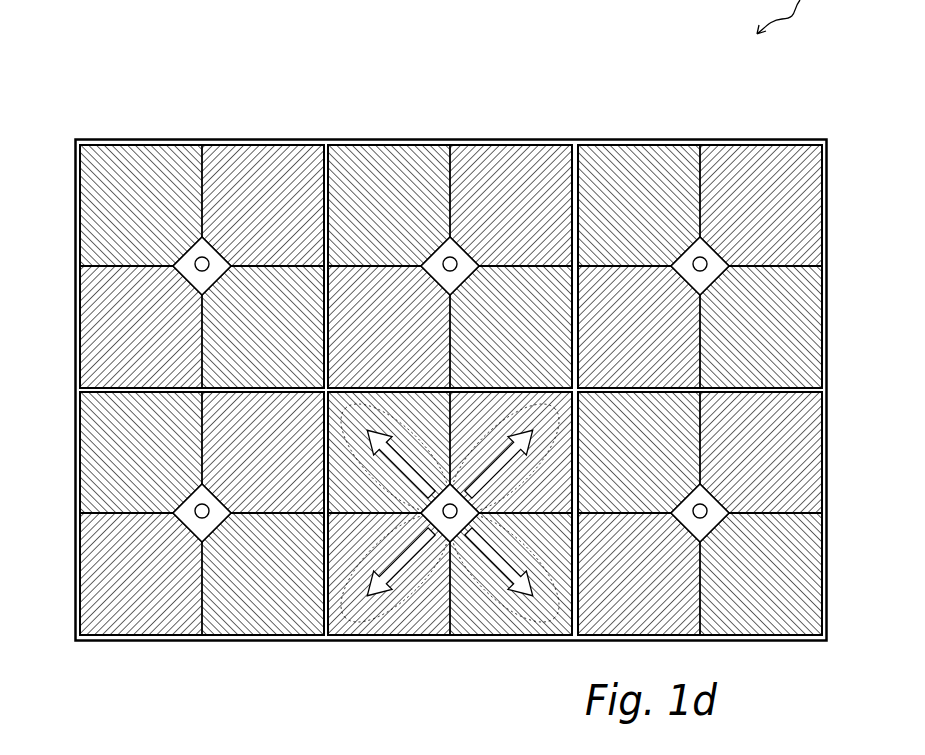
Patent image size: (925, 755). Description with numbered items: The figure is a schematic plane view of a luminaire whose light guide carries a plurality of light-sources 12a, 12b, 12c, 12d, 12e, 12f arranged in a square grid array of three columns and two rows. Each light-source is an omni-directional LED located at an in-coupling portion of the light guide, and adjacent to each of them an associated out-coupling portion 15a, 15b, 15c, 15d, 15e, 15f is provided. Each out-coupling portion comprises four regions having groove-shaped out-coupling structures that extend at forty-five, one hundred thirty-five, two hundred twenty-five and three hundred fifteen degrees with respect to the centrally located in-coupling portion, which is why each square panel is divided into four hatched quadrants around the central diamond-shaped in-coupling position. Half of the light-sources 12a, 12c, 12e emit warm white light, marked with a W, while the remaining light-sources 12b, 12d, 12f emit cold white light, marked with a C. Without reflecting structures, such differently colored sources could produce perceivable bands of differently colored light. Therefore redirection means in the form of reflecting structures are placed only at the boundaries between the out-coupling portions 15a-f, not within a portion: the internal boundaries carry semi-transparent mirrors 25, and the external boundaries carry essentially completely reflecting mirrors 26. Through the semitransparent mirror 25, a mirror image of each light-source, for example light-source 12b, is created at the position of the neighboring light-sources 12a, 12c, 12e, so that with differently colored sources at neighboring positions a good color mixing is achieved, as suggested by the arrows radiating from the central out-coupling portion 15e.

The essentially completely reflecting mirror 26 is at (73, 176).
The semi-transparent mirror 25 is at (328, 212).
The out-coupling portion 15a is at (270, 175).
The out-coupling portion 15b is at (533, 173).
The out-coupling portion 15c is at (777, 180).
The out-coupling portion 15d is at (123, 615).
The out-coupling portion 15e is at (422, 615).
The out-coupling portion 15f is at (803, 575).
The light-source 12a is at (189, 250).
The light-source 12b is at (467, 251).
The light-source 12c is at (688, 252).
The light-source 12d is at (210, 521).
The light-source 12e is at (468, 524).
The light-source 12f is at (716, 524).